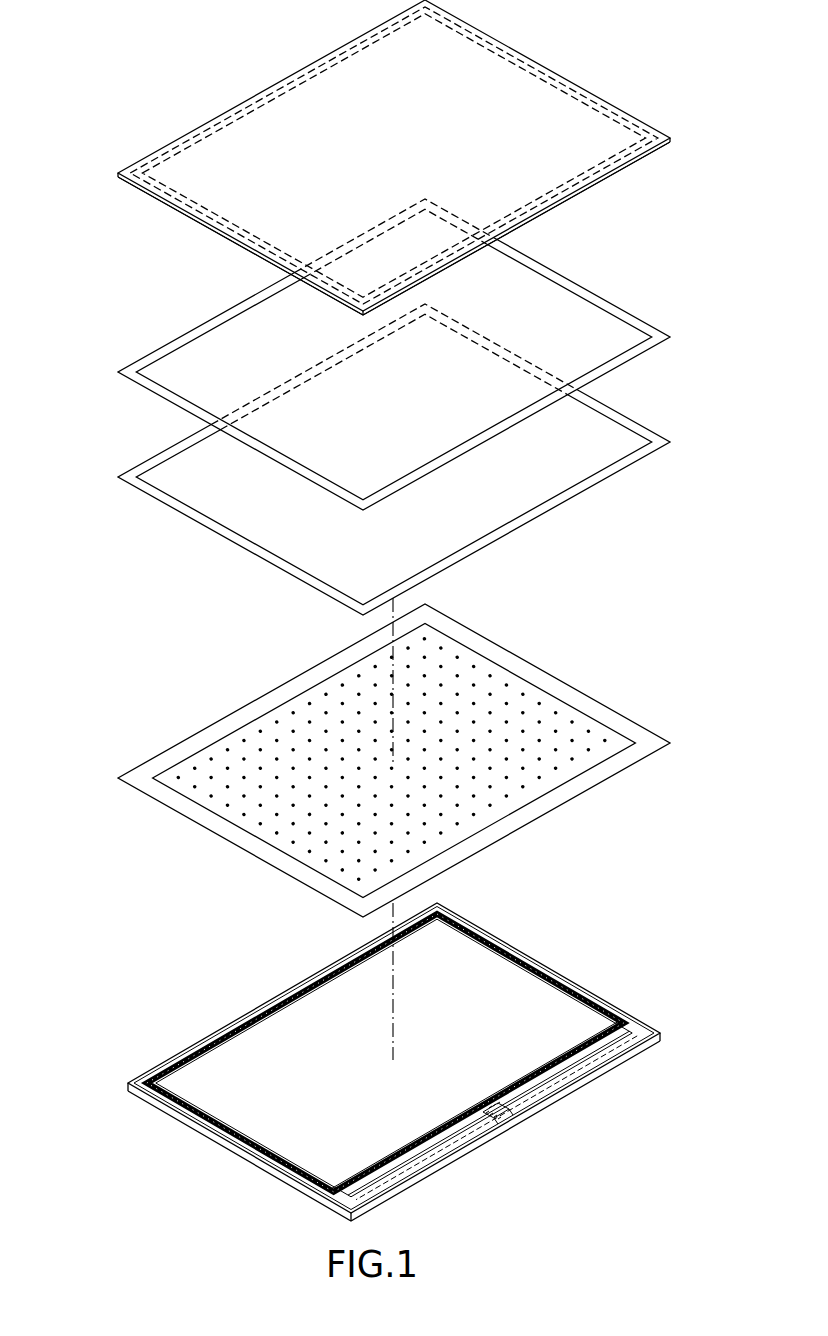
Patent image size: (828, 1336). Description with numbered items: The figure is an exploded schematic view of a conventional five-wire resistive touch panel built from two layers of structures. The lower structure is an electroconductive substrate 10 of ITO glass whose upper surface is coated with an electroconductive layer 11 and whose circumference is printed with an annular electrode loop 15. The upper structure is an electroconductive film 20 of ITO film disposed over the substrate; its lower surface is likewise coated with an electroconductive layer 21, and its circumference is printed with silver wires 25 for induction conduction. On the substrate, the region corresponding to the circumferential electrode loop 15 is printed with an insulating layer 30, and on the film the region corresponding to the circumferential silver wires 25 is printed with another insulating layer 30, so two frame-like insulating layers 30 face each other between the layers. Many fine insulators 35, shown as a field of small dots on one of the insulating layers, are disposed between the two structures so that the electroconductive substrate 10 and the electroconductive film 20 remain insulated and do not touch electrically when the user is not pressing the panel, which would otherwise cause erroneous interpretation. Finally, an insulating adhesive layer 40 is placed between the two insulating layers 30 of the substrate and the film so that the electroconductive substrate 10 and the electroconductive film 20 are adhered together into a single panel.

The electroconductive substrate 10 is at (510, 1128).
The electroconductive layer 11 is at (500, 977).
The annular electrode loop 15 is at (143, 1102).
The electroconductive film 20 is at (547, 69).
The electroconductive layer 21 is at (608, 173).
The silver wires 25 is at (173, 157).
The insulating layer 30 is at (202, 322).
The fine insulators 35 is at (238, 738).
The insulating adhesive layer 40 is at (172, 447).